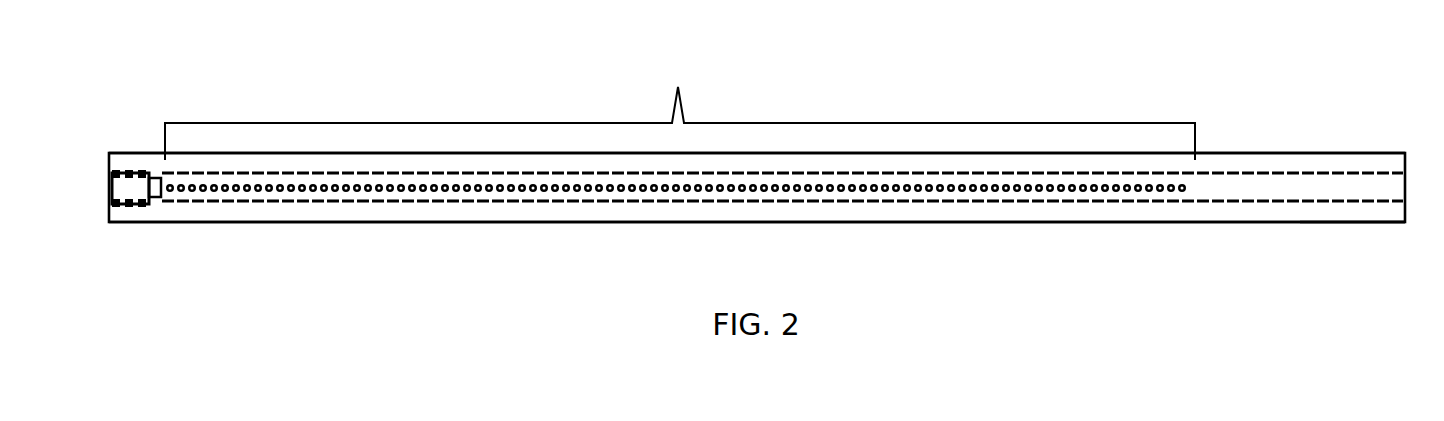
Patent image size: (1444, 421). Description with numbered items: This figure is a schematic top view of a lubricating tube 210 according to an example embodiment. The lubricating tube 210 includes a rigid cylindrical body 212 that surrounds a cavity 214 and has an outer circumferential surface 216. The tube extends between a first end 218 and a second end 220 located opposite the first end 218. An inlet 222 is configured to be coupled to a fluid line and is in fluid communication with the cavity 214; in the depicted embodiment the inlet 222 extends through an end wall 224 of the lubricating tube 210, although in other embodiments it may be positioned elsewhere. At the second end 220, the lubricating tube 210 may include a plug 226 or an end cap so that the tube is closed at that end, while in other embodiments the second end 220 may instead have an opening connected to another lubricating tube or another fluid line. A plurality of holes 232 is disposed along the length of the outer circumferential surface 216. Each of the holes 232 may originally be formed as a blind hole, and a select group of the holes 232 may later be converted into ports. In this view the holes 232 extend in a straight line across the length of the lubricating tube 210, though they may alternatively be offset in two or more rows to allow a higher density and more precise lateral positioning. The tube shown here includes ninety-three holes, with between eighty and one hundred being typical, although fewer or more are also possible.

The lubricating tube 210 is at (1248, 96).
The rigid cylindrical body 212 is at (1062, 207).
The cavity 214 is at (1243, 187).
The outer circumferential surface 216 is at (465, 221).
The first end 218 is at (1372, 245).
The second end 220 is at (145, 244).
The inlet 222 is at (1400, 199).
The end wall 224 is at (1405, 155).
The plug 226 is at (120, 186).
The holes 232 is at (680, 105).